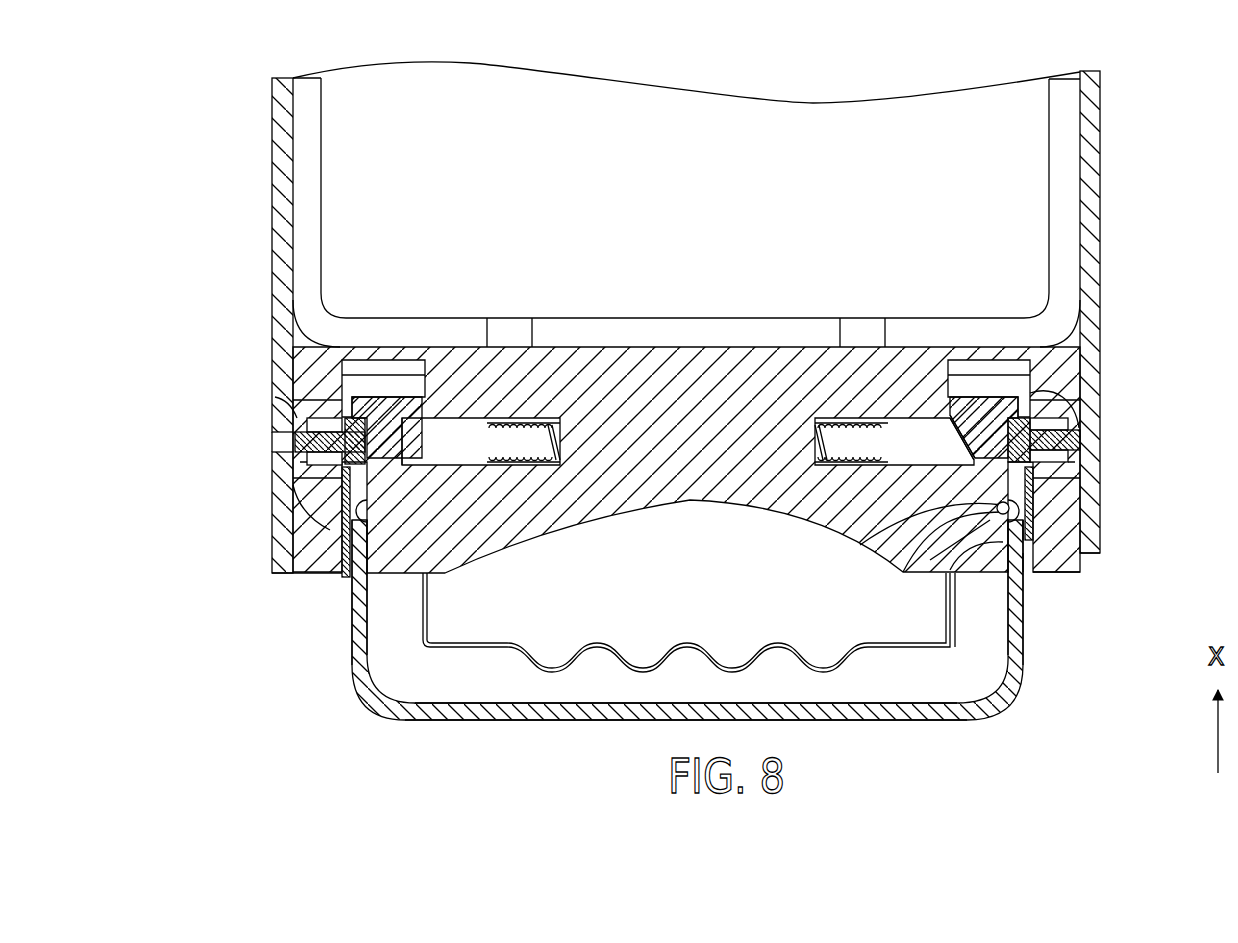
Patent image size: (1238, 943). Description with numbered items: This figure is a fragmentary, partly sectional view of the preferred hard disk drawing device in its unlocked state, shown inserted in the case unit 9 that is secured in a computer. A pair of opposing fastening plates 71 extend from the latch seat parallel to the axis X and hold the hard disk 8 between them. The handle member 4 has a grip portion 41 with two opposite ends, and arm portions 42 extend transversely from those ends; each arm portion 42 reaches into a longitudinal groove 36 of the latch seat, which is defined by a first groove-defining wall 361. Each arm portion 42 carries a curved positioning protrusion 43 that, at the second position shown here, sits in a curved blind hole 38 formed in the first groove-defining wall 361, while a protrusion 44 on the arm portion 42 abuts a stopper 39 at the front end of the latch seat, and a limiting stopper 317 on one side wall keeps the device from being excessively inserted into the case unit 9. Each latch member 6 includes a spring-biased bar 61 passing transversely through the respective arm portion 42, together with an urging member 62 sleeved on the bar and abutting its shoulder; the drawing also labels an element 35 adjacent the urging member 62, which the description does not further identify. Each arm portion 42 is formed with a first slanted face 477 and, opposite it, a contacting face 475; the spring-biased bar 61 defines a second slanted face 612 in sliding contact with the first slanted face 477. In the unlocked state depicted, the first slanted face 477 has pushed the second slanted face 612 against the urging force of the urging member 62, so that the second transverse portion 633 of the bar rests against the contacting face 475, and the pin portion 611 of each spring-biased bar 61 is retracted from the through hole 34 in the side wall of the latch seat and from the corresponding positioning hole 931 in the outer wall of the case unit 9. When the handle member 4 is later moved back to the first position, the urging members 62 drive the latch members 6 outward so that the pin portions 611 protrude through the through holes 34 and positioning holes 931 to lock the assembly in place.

The handle member 4 is at (432, 726).
The latch member 6 is at (508, 410).
The hard disk 8 is at (1028, 176).
The case unit 9 is at (1106, 129).
The through hole 34 is at (293, 400).
The contact plate 35 is at (530, 418).
The longitudinal groove 36 is at (1040, 518).
The curved blind hole 38 is at (905, 520).
The stopper 39 is at (1040, 575).
The grip portion 41 is at (497, 722).
The arm portion 42 is at (352, 608).
The curved positioning protrusion 43 is at (935, 555).
The protrusion 44 is at (1040, 580).
The spring-biased bar 61 is at (457, 435).
The urging member 62 is at (545, 430).
The fastening plate 71 is at (303, 103).
The limiting stopper 317 is at (275, 562).
The first groove-defining wall 361 is at (950, 573).
The contacting face 475 is at (1060, 360).
The first slanted face 477 is at (955, 345).
The pin portion 611 is at (300, 475).
The second slanted face 612 is at (945, 437).
The second transverse portion 633 is at (292, 525).
The positioning hole 931 is at (295, 420).